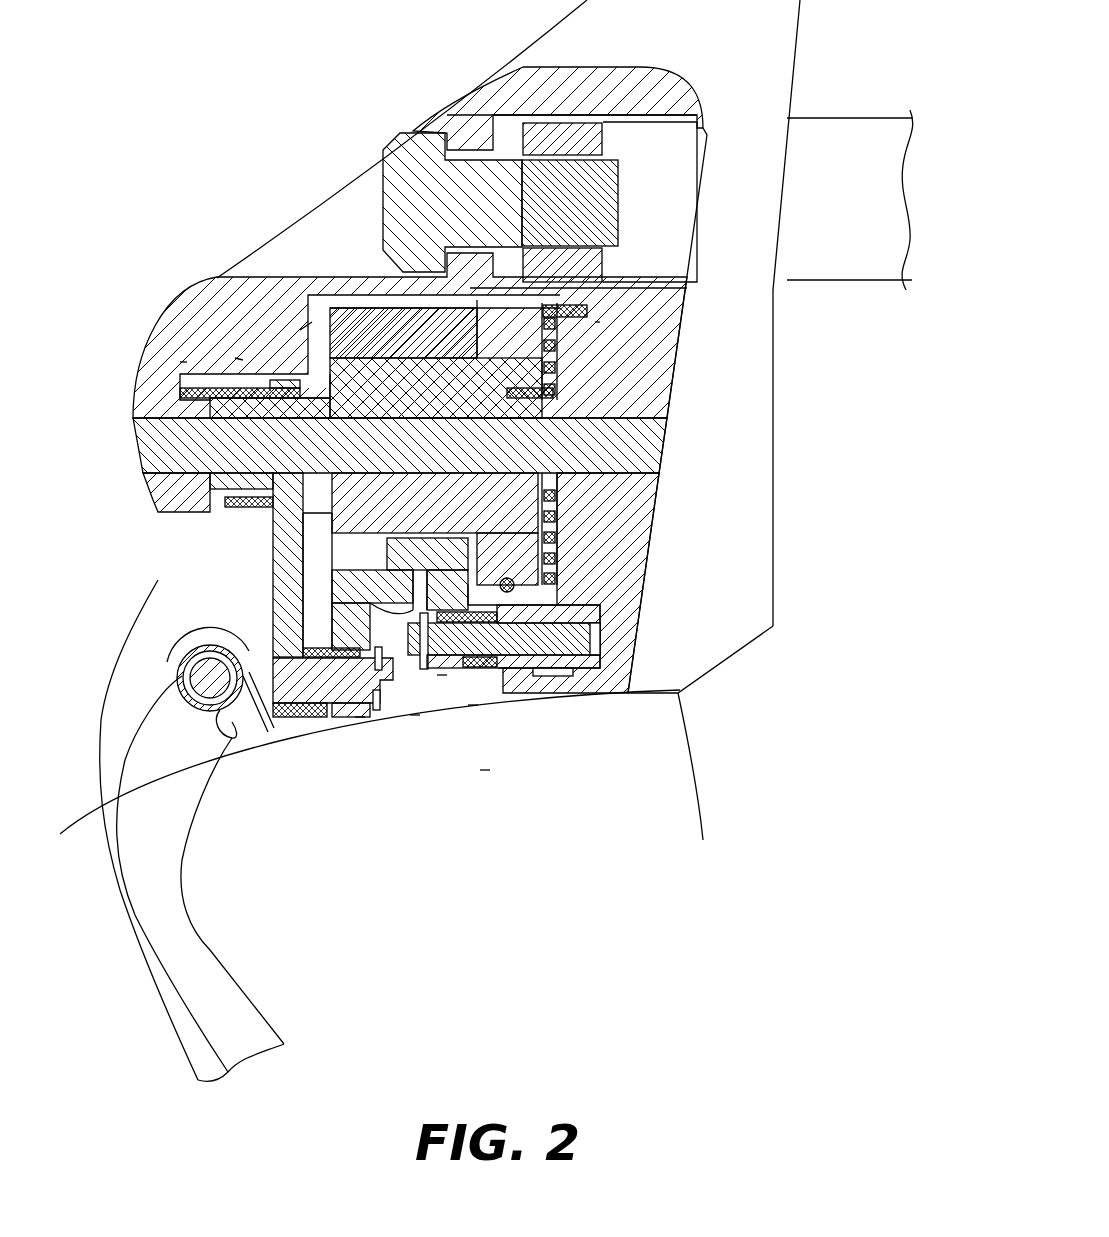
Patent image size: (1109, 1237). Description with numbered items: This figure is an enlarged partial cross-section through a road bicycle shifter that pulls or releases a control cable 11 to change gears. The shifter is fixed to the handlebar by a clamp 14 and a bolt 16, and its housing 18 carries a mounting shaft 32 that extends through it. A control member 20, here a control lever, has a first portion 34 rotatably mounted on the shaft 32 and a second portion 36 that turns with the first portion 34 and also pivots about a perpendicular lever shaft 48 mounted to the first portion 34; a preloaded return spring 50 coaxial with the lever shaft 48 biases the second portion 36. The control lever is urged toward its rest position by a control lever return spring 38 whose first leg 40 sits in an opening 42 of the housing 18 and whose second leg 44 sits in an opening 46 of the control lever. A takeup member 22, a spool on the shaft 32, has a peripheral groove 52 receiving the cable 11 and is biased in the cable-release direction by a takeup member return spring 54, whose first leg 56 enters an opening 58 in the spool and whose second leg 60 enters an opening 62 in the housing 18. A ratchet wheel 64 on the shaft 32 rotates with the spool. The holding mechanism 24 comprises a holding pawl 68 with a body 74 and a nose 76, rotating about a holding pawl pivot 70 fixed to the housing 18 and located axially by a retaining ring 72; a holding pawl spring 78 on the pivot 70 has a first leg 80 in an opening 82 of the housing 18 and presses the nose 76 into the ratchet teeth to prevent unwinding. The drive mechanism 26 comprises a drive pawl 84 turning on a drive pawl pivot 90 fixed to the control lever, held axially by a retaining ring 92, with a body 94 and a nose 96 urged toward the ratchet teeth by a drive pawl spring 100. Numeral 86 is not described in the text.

The control cable 11 is at (520, 585).
The clamp 14 is at (530, 130).
The bolt 16 is at (425, 160).
The housing 18 is at (548, 700).
The control member 20 is at (243, 988).
The takeup member 22 is at (262, 333).
The holding mechanism 24 is at (485, 770).
The drive mechanism 26 is at (415, 715).
The mounting shaft 32 is at (150, 450).
The first portion 34 is at (290, 715).
The second portion 36 is at (255, 1022).
The control lever return spring 38 is at (243, 360).
The first leg 40 is at (187, 362).
The opening 42 is at (200, 392).
The second leg 44 is at (250, 410).
The opening 46 is at (312, 322).
The lever shaft 48 is at (182, 672).
The return spring 50 is at (250, 712).
The groove 52 is at (600, 258).
The takeup member return spring 54 is at (555, 580).
The first leg 56 is at (560, 388).
The opening 58 is at (520, 400).
The second leg 60 is at (570, 308).
The opening 62 is at (600, 322).
The ratchet wheel 64 is at (348, 312).
The holding pawl 68 is at (442, 675).
The holding pawl pivot 70 is at (570, 640).
The retaining ring 72 is at (437, 675).
The body 74 is at (368, 622).
The nose 76 is at (362, 538).
The holding pawl spring 78 is at (473, 705).
The first leg 80 is at (503, 668).
The opening 82 is at (600, 664).
The drive pawl 84 is at (375, 718).
The plate 86 is at (520, 615).
The drive pawl pivot 90 is at (360, 718).
The retaining ring 92 is at (377, 712).
The body 94 is at (315, 616).
The nose 96 is at (360, 585).
The drive pawl spring 100 is at (313, 718).